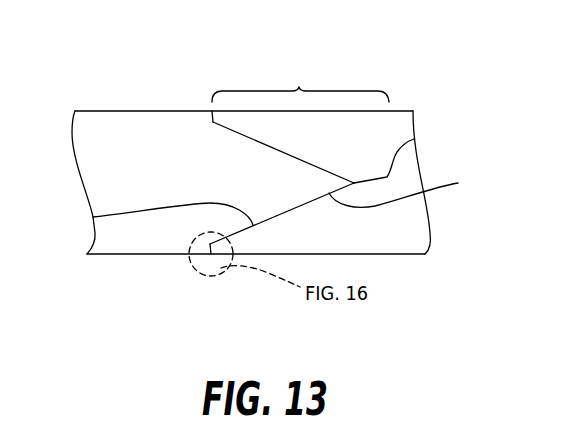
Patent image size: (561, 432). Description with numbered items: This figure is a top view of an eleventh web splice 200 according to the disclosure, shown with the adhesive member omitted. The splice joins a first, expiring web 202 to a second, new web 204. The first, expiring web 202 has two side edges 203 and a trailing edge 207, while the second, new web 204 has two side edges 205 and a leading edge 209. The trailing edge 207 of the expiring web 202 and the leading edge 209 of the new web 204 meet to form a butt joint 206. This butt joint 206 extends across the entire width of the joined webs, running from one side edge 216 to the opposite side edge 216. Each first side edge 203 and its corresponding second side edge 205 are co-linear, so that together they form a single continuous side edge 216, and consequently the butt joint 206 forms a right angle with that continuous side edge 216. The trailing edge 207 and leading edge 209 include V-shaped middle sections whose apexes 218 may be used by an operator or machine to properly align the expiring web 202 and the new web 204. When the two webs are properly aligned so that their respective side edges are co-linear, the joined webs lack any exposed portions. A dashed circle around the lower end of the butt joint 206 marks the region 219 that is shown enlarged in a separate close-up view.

The web splice 200 is at (98, 53).
The first, expiring web 202 is at (390, 122).
The side edge 203 is at (392, 112).
The second, new web 204 is at (173, 120).
The side edge 205 is at (110, 110).
The butt joint 206 is at (300, 83).
The trailing edge 207 is at (408, 190).
The leading edge 209 is at (93, 217).
The continuous side edge 216 is at (193, 110).
The apex 218 is at (414, 139).
The junction 219 is at (211, 254).